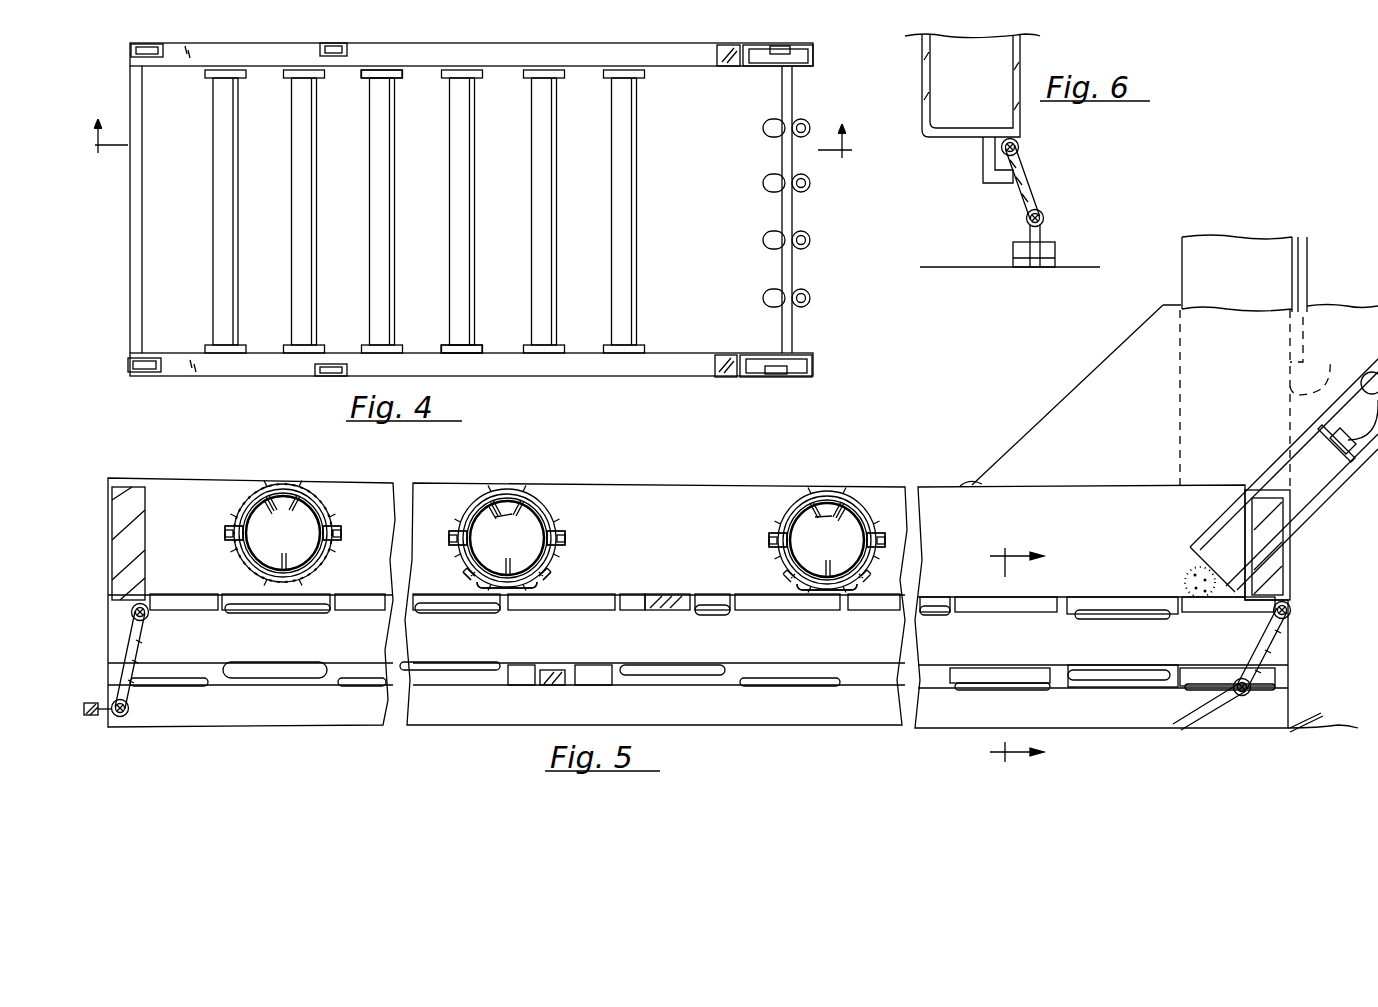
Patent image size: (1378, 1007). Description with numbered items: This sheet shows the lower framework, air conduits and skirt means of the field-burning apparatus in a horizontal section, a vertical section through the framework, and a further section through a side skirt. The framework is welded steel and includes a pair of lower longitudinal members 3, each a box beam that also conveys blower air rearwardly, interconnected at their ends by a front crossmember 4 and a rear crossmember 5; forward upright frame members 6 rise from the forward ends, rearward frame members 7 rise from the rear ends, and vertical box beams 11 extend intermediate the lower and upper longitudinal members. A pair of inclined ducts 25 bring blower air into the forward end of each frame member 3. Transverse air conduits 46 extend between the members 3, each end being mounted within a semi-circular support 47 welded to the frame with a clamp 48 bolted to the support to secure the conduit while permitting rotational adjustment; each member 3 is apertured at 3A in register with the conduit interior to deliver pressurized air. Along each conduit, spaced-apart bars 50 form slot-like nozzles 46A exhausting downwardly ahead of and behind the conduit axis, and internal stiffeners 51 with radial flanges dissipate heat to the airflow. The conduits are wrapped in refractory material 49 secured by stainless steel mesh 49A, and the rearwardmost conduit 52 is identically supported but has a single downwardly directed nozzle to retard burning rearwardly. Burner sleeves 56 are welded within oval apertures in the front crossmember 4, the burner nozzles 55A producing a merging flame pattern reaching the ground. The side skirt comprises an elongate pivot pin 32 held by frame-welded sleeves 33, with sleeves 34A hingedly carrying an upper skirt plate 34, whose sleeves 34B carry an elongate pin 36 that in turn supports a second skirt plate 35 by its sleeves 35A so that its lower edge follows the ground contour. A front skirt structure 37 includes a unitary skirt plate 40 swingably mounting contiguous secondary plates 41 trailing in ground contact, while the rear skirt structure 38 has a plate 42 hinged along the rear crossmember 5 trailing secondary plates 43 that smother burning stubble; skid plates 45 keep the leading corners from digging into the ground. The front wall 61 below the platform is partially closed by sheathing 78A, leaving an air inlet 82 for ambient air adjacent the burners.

In FIG. 4, the lower longitudinal member 3 is at (436, 50).
In FIG. 6, the lower longitudinal member 3 is at (1022, 64).
In FIG. 5, the lower longitudinal member 3 is at (650, 492).
In FIG. 5, the aperture 3A is at (254, 559).
In FIG. 4, the front crossmember 4 is at (793, 210).
In FIG. 5, the front crossmember 4 is at (1290, 567).
In FIG. 4, the rear crossmember 5 is at (155, 216).
In FIG. 5, the rear crossmember 5 is at (146, 508).
In FIG. 4, the upright frame member 6 is at (811, 52).
In FIG. 5, the upright frame member 6 is at (1286, 291).
In FIG. 4, the rearward frame member 7 is at (148, 45).
In FIG. 4, the vertical box beam 11 is at (326, 45).
In FIG. 4, the duct 25 is at (739, 70).
In FIG. 5, the duct 25 is at (1116, 374).
In FIG. 6, the pivot pin 32 is at (1003, 150).
In FIG. 5, the pivot pin 32 is at (668, 594).
In FIG. 6, the sleeve 33 is at (1020, 150).
In FIG. 5, the sleeve 33 is at (345, 594).
In FIG. 6, the upper skirt plate 34 is at (1024, 178).
In FIG. 5, the upper skirt plate 34 is at (382, 640).
In FIG. 5, the sleeve 34A is at (240, 612).
In FIG. 5, the sleeve 34B is at (246, 664).
In FIG. 5, the second skirt plate 35 is at (264, 715).
In FIG. 5, the sleeve 35A is at (356, 680).
In FIG. 6, the elongate pin 36 is at (1040, 212).
In FIG. 5, the elongate pin 36 is at (556, 671).
In FIG. 5, the front skirt structure 37 is at (1280, 660).
In FIG. 5, the rear skirt structure 38 is at (120, 644).
In FIG. 5, the unitary skirt plate 40 is at (1280, 630).
In FIG. 5, the secondary plate 41 is at (1222, 708).
In FIG. 5, the plate 42 is at (144, 634).
In FIG. 5, the secondary plate 43 is at (88, 702).
In FIG. 5, the skid plate 45 is at (1298, 716).
In FIG. 4, the air conduit 46 is at (410, 220).
In FIG. 5, the air conduit 46 is at (454, 522).
In FIG. 5, the slot-like nozzle 46A is at (552, 578).
In FIG. 5, the semi-circular support 47 is at (230, 544).
In FIG. 4, the clamp 48 is at (397, 79).
In FIG. 5, the clamp 48 is at (548, 514).
In FIG. 5, the refractory material 49 is at (330, 514).
In FIG. 5, the stainless steel mesh 49A is at (280, 486).
In FIG. 5, the bar 50 is at (466, 584).
In FIG. 5, the stiffener 51 is at (512, 516).
In FIG. 4, the rearwardmost conduit 52 is at (232, 204).
In FIG. 5, the rearwardmost conduit 52 is at (238, 520).
In FIG. 5, the burner nozzle 55A is at (1192, 574).
In FIG. 4, the burner sleeve 56 is at (773, 297).
In FIG. 5, the burner sleeve 56 is at (1318, 498).
In FIG. 5, the front wall 61 is at (1306, 302).
In FIG. 5, the sheathing 78A is at (1298, 260).
In FIG. 5, the air inlet 82 is at (1259, 398).